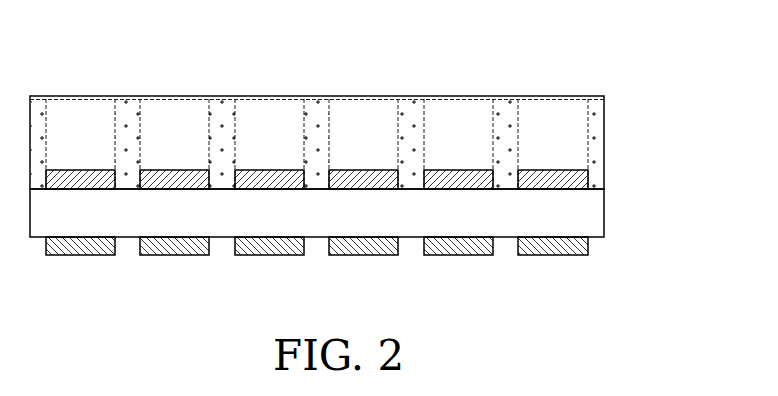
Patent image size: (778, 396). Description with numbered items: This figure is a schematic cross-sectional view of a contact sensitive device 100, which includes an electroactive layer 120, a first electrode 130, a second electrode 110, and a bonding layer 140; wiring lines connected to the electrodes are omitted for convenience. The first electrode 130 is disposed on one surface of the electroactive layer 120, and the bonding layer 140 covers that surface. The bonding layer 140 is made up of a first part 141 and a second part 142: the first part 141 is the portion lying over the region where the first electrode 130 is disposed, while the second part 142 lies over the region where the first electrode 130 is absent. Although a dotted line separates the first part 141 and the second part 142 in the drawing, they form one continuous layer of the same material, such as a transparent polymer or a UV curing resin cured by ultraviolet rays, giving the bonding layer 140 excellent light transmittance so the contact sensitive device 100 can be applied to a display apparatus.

The contact sensitive device 100 is at (606, 37).
The second electrode 110 is at (470, 250).
The electroactive layer 120 is at (577, 214).
The first electrode 130 is at (472, 175).
The bonding layer 140 is at (663, 107).
The first part 141 is at (470, 112).
The second part 142 is at (502, 137).